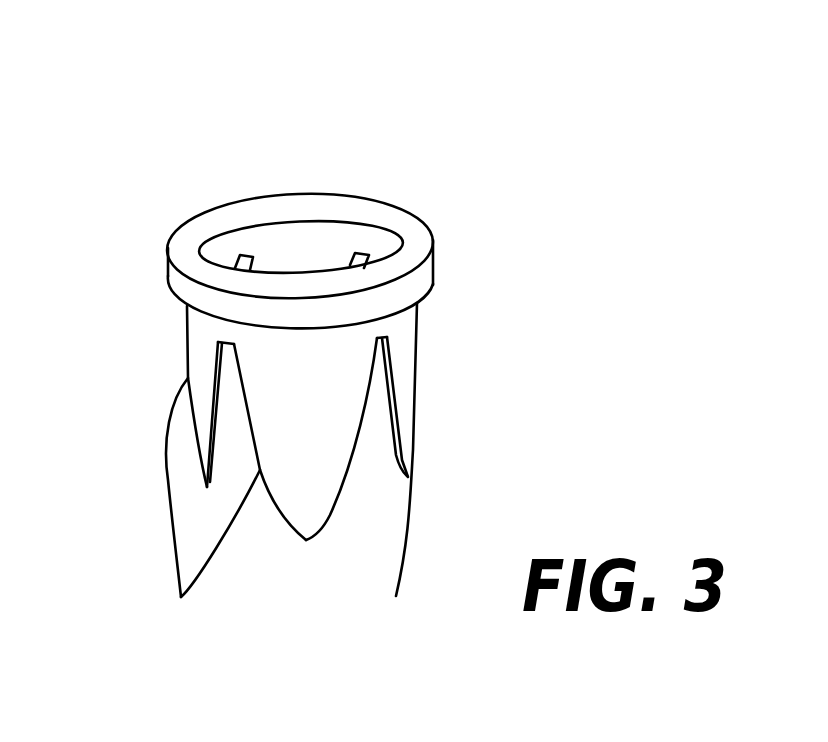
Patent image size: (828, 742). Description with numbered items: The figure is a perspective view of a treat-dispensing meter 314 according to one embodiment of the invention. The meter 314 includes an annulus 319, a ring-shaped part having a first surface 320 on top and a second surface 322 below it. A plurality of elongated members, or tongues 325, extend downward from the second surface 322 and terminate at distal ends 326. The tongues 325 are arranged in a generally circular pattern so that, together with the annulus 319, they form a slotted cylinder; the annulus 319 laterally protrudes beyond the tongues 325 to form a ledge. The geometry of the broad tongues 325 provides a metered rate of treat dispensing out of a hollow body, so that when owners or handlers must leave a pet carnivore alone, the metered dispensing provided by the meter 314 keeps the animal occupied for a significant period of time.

The meter 314 is at (190, 155).
The annulus 319 is at (435, 267).
The first surface 320 is at (403, 227).
The second surface 322 is at (428, 292).
The tongues 325 is at (203, 512).
The distal ends 326 is at (306, 540).